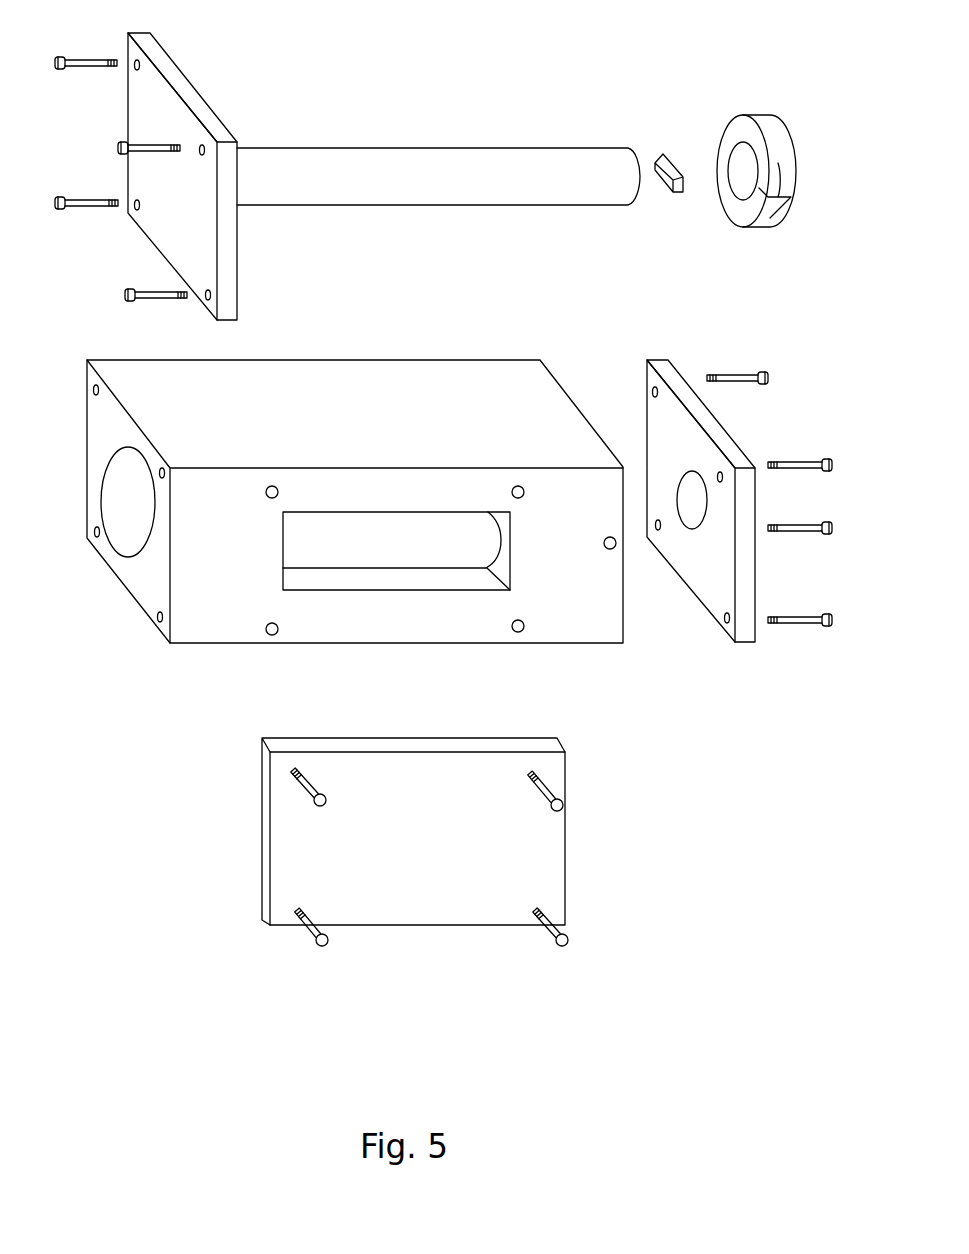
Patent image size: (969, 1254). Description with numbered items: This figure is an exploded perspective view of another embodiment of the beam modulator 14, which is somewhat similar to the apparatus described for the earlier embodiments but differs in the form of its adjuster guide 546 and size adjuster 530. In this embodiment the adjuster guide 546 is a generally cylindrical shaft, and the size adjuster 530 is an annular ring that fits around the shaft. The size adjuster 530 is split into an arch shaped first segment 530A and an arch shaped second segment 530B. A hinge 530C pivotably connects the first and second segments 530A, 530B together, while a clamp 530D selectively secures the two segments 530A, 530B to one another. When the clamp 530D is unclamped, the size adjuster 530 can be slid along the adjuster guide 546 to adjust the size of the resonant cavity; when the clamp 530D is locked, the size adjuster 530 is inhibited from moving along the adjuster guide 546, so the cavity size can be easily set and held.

The beam modulator 14 is at (577, 102).
The adjuster guide 546 is at (357, 150).
The size adjuster 530 is at (779, 154).
The first segment 530A is at (780, 141).
The second segment 530B is at (738, 213).
The hinge 530C is at (733, 143).
The clamp 530D is at (790, 212).